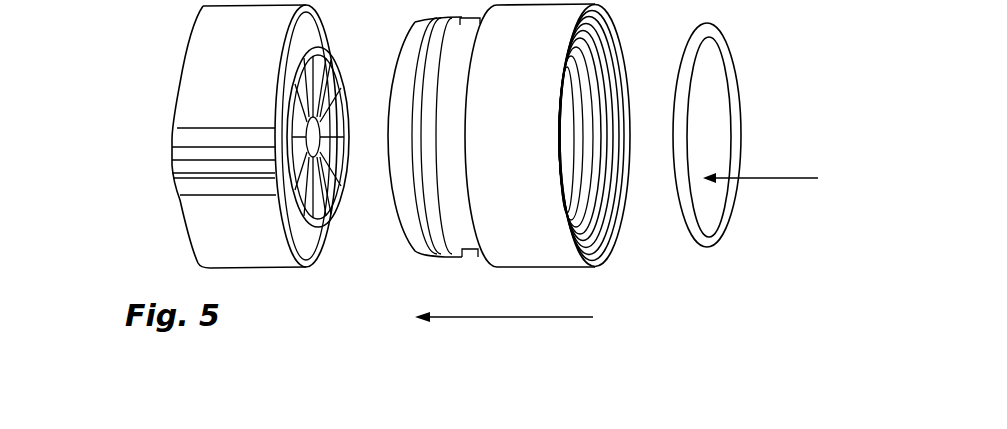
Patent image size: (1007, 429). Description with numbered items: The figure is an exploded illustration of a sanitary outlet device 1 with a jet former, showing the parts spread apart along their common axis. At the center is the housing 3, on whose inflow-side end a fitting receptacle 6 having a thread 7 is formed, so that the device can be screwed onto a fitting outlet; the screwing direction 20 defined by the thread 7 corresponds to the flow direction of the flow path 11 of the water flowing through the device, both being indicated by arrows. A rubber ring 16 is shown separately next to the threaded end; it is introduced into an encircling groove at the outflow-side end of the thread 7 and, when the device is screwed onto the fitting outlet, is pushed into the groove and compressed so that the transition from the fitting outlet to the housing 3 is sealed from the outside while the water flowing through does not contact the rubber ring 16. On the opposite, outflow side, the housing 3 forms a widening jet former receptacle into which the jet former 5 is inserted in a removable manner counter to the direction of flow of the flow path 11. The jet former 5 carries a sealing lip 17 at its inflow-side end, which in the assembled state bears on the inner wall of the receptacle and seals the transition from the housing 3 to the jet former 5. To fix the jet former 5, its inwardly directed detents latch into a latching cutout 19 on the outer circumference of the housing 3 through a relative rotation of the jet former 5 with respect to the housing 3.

The sanitary outlet device 1 is at (778, 82).
The housing 3 is at (515, 50).
The jet former 5 is at (217, 93).
The fitting receptacle 6 is at (597, 150).
The thread 7 is at (593, 50).
The flow path 11 is at (525, 319).
The rubber ring 16 is at (732, 198).
The sealing lip 17 is at (343, 123).
The latching cutout 19 is at (470, 253).
The screwing direction 20 is at (786, 170).